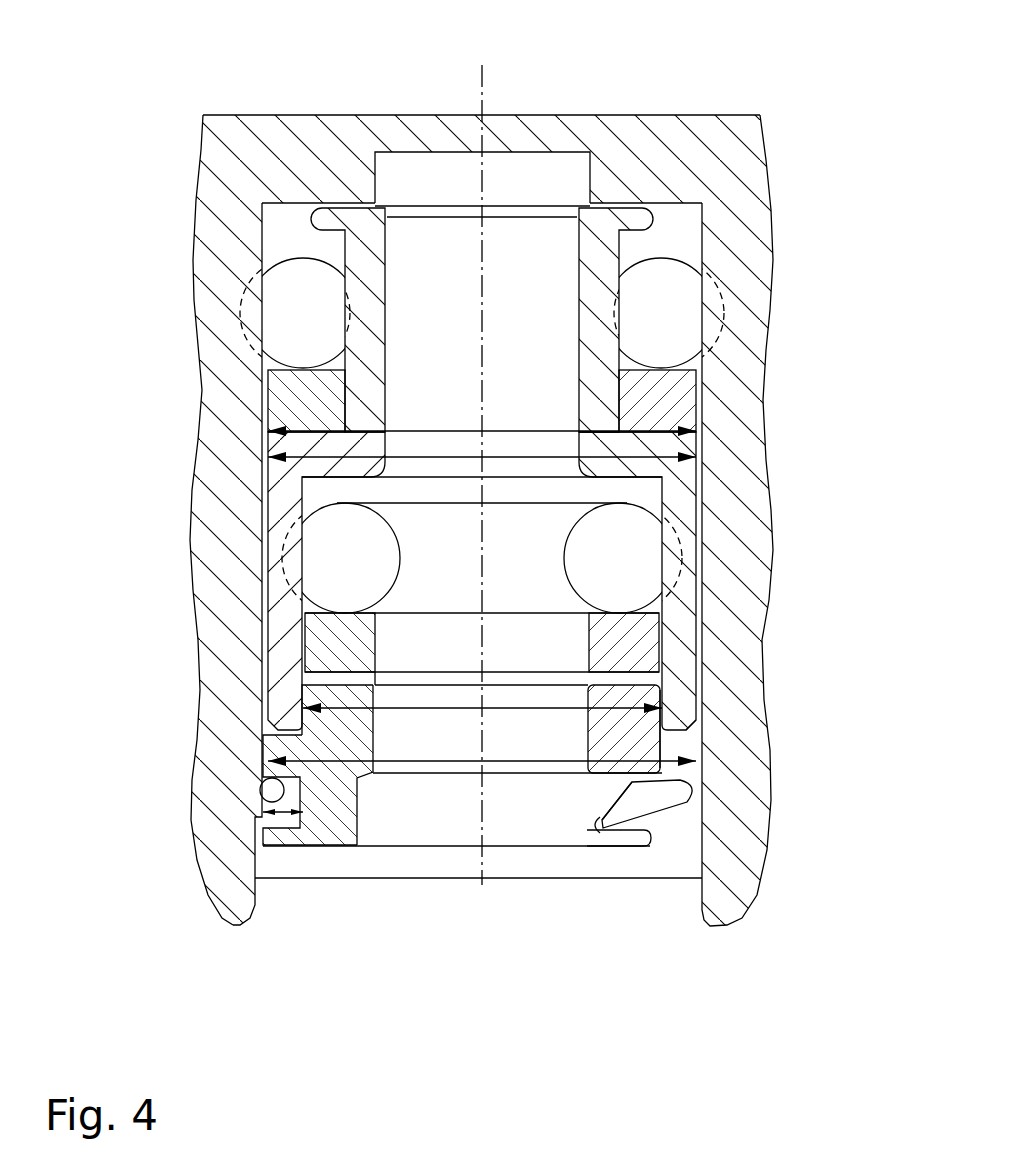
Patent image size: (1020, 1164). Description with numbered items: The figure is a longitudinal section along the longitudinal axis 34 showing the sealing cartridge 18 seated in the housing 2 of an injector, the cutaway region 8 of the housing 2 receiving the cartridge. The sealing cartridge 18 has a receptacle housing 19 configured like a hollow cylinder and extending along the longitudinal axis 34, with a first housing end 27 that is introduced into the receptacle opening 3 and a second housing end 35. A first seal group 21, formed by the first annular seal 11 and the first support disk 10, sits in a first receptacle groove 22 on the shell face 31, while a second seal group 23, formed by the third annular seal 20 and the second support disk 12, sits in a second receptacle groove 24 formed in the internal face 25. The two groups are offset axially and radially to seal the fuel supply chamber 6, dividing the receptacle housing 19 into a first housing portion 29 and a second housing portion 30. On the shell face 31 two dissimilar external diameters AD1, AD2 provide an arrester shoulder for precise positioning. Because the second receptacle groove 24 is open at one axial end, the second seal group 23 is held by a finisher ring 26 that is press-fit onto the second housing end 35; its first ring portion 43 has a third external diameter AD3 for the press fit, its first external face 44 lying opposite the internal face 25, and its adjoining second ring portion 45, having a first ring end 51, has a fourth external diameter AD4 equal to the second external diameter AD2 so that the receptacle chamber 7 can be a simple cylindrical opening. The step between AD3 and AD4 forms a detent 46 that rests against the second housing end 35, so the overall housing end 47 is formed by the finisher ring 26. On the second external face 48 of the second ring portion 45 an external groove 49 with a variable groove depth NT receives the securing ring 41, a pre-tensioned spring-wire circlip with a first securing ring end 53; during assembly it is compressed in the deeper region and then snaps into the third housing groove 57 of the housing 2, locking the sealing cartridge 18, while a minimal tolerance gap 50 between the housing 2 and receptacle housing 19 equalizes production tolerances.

The housing 2 is at (745, 137).
The receptacle opening 3 is at (410, 179).
The fuel supply chamber 6 is at (565, 174).
The receptacle chamber 7 is at (269, 868).
The housing 8 is at (798, 333).
The first support disk 10 is at (677, 413).
The first annular seal 11 is at (663, 323).
The second support disk 12 is at (638, 647).
The sealing cartridge 18 is at (806, 230).
The receptacle housing 19 is at (608, 447).
The third annular seal 20 is at (643, 557).
The first seal group 21 is at (170, 323).
The first receptacle groove 22 is at (344, 247).
The second seal group 23 is at (170, 620).
The second receptacle groove 24 is at (316, 492).
The internal face 25 is at (386, 268).
The finisher ring 26 is at (663, 750).
The first housing end 27 is at (635, 184).
The first housing portion 29 is at (127, 295).
The second housing portion 30 is at (132, 577).
The shell face 31 is at (697, 603).
The longitudinal axis 34 is at (482, 171).
The second housing end 35 is at (668, 737).
The securing ring 41 is at (272, 790).
The first ring portion 43 is at (170, 697).
The first external face 44 is at (300, 703).
The second ring portion 45 is at (132, 820).
The detent 46 is at (470, 809).
The overall housing end 47 is at (322, 846).
The second external face 48 is at (265, 750).
The external groove 49 is at (678, 820).
The tolerance gap 50 is at (322, 203).
The first ring end 51 is at (616, 794).
The first securing ring end 53 is at (589, 841).
The third housing groove 57 is at (705, 788).
The first external diameter AD1 is at (545, 431).
The second external diameter AD2 is at (667, 457).
The third external diameter AD3 is at (618, 708).
The fourth external diameter AD4 is at (300, 761).
The groove depth NT is at (279, 812).